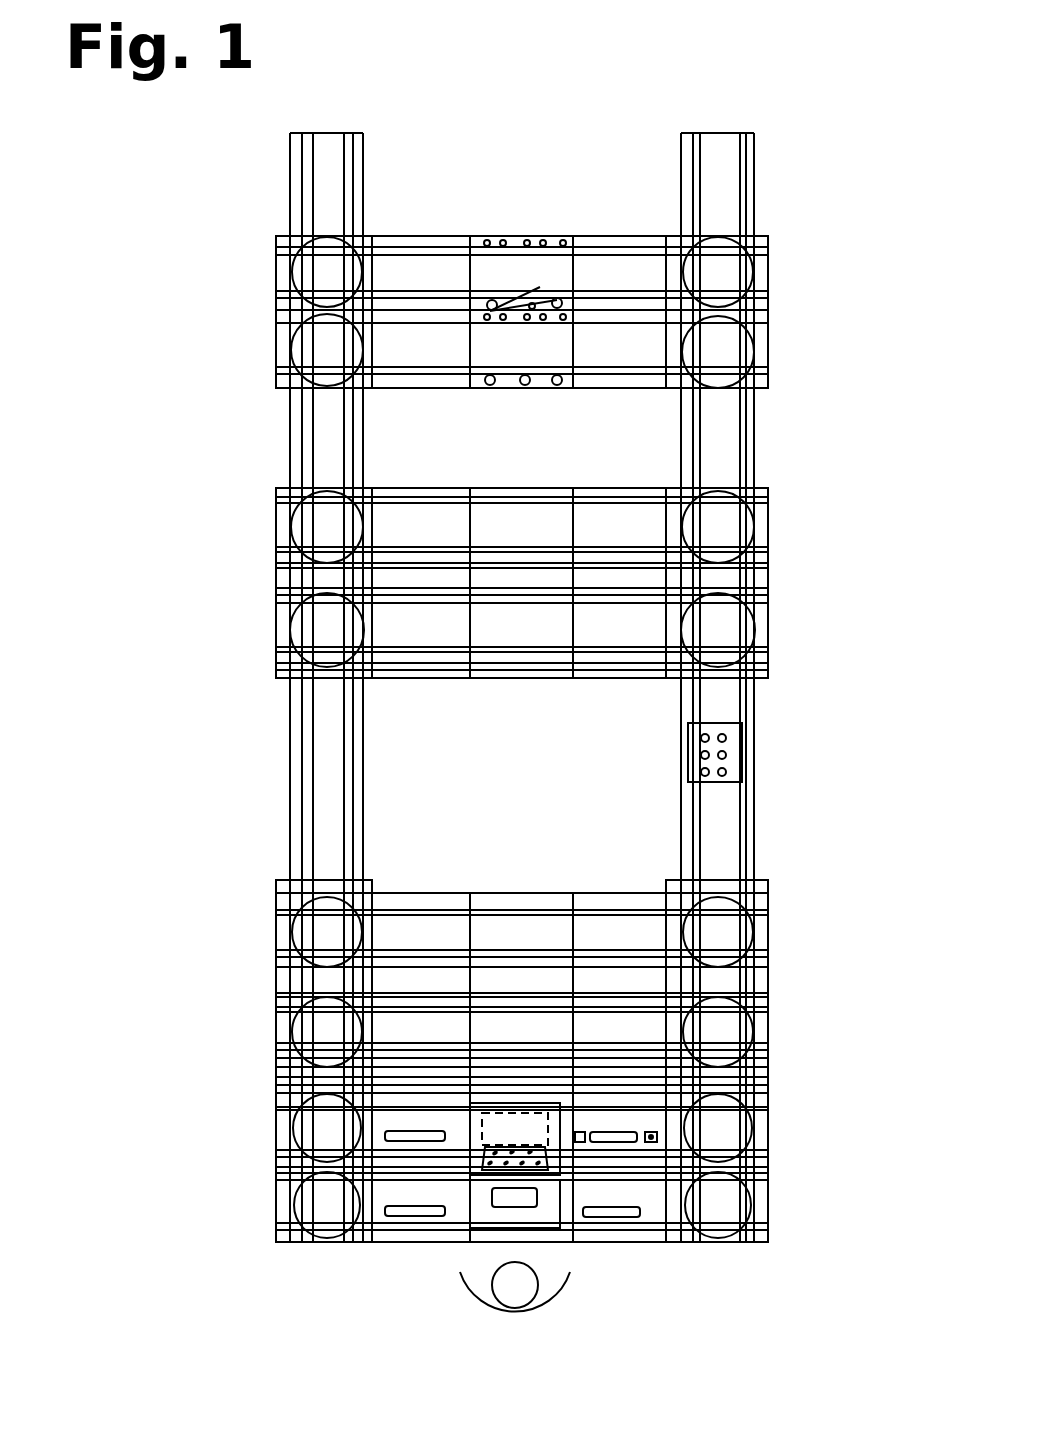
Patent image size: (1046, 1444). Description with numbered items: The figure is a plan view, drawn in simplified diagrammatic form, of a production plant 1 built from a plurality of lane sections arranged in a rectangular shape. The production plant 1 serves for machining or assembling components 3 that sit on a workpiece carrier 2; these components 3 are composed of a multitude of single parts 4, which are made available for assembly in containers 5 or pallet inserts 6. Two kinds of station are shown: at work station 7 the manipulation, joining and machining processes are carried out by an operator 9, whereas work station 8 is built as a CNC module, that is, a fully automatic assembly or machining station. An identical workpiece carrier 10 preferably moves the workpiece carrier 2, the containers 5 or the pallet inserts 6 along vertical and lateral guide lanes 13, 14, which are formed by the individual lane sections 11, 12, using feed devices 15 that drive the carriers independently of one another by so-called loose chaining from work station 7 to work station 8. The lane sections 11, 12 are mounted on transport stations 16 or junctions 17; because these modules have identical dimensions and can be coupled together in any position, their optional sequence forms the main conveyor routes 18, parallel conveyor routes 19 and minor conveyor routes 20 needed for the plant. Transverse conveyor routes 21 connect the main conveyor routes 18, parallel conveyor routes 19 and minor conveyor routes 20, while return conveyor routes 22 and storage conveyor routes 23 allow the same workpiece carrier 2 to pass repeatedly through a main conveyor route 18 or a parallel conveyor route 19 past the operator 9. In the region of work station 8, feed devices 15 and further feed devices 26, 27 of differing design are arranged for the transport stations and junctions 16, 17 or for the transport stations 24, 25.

The production plant 1 is at (848, 90).
The workpiece carrier 2 is at (527, 1178).
The components 3 is at (530, 1207).
The single parts 4 is at (732, 739).
The containers 5 is at (512, 1192).
The pallet inserts 6 is at (744, 763).
The work station 7 is at (550, 1190).
The work station 8 is at (797, 322).
The operator 9 is at (516, 1293).
The workpiece carrier 10 is at (552, 1103).
The lane section 11 is at (585, 903).
The lane section 12 is at (414, 918).
The guide lane 13 is at (627, 1110).
The guide lane 14 is at (652, 1136).
The feed device 15 is at (623, 1217).
The transport station 16 is at (399, 890).
The junction 17 is at (272, 927).
The main conveyor route 18 is at (650, 395).
The parallel conveyor route 19 is at (387, 1243).
The minor conveyor route 20 is at (398, 1116).
The transverse conveyor route 21 is at (262, 1082).
The return conveyor route 22 is at (403, 670).
The storage conveyor route 23 is at (492, 1030).
The transport station 24 is at (535, 340).
The transport station 25 is at (476, 232).
The feed device 26 is at (541, 282).
The feed device 27 is at (485, 390).